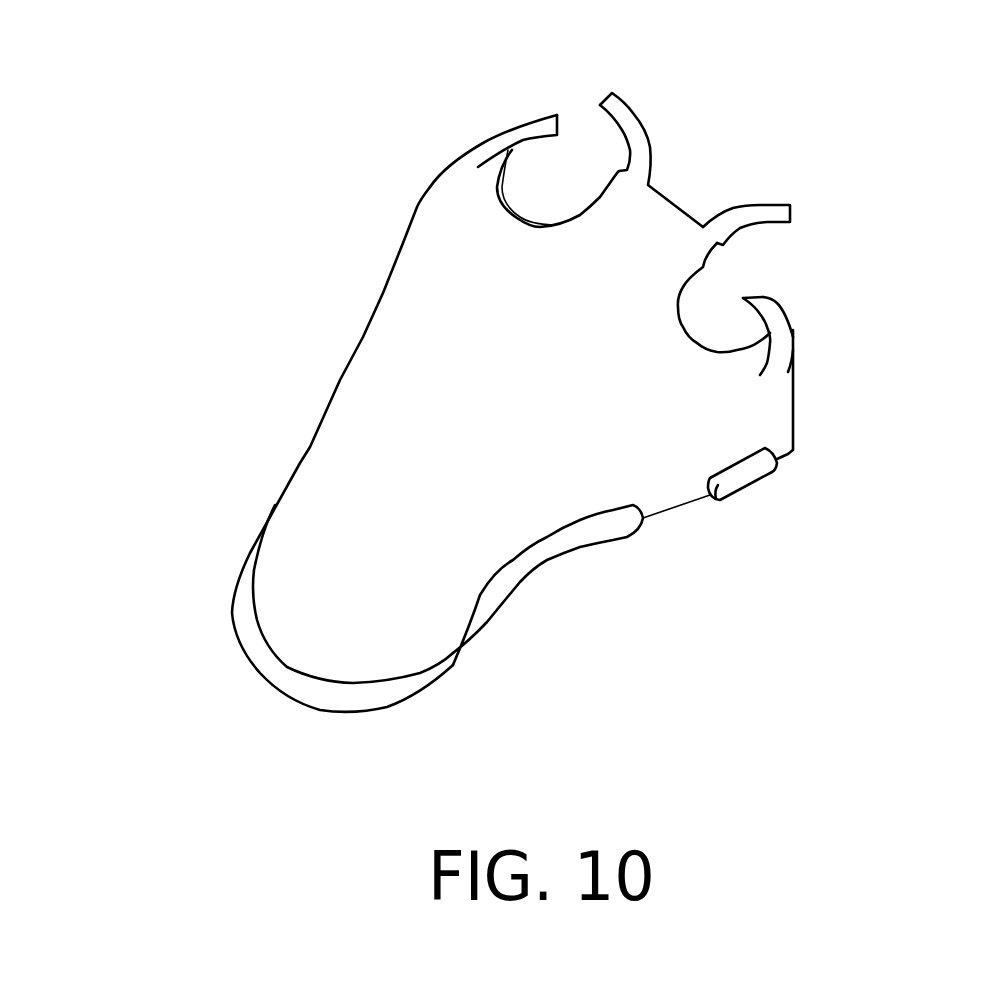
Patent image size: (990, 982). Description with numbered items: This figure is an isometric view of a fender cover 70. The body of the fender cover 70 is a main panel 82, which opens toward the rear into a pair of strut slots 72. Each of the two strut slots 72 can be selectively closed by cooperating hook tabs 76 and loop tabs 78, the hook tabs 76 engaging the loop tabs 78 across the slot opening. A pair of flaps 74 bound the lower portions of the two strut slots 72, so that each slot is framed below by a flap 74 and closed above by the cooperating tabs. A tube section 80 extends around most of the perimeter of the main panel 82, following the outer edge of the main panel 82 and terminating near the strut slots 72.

The fender cover 70 is at (258, 726).
The strut slots 72 is at (553, 187).
The flaps 74 is at (457, 190).
The hook tabs 76 is at (522, 133).
The loop tabs 78 is at (630, 127).
The tube section 80 is at (468, 625).
The main panel 82 is at (320, 588).